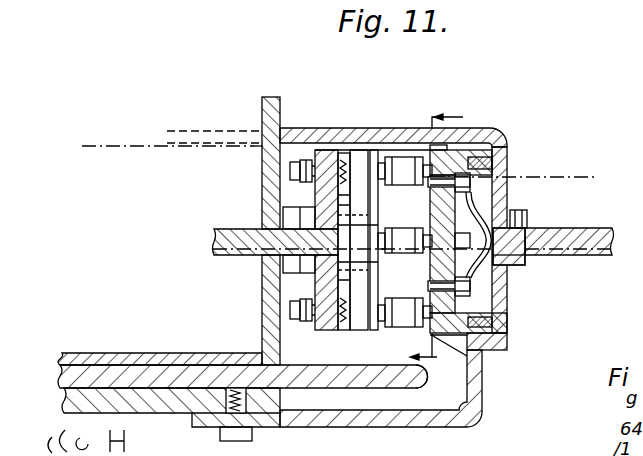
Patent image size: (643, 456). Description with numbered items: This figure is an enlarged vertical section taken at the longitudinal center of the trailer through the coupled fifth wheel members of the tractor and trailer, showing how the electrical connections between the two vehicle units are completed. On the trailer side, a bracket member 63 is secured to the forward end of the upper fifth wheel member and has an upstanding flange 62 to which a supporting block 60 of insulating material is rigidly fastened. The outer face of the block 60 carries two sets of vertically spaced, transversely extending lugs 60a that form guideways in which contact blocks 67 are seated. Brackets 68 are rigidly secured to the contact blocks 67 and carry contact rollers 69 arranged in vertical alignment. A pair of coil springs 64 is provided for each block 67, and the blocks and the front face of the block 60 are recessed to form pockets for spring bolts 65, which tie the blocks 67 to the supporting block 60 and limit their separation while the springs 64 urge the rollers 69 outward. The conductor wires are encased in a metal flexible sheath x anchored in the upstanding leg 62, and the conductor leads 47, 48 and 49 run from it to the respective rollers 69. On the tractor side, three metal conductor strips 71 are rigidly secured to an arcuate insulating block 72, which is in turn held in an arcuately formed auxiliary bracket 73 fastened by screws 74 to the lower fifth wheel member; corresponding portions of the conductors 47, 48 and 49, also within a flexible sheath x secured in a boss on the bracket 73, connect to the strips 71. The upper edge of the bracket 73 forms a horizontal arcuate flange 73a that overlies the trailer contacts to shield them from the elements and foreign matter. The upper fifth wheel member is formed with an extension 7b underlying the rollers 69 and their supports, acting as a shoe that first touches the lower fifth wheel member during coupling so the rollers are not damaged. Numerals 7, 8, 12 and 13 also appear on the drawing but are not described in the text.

The base frame 7 is at (213, 378).
The extension 7b is at (375, 384).
The lower base plate 8 is at (178, 408).
The section line 12- 12 is at (143, 150).
The section line 13- 13 is at (453, 239).
The conductor lead 47 is at (520, 298).
The conductor lead 48 is at (262, 268).
The conductor lead 49 is at (496, 220).
The supporting block 60 is at (262, 285).
The lugs 60a is at (420, 268).
The upstanding flange 62 is at (262, 177).
The bracket member 63 is at (98, 360).
The coil springs 64 is at (343, 160).
The spring bolts 65 is at (311, 162).
The contact blocks 67 is at (364, 160).
The brackets 68 is at (392, 327).
The contact rollers 69 is at (408, 168).
The metal conductor strips 71 is at (473, 133).
The insulating block 72 is at (505, 350).
The auxiliary bracket 73 is at (507, 338).
The arcuate flange 73a is at (393, 130).
The screws 74 is at (233, 433).
The flexible sheath x is at (212, 242).